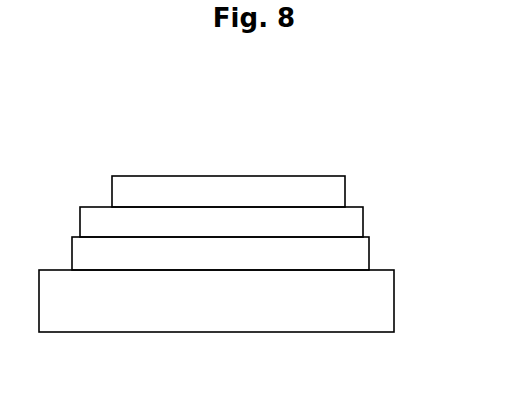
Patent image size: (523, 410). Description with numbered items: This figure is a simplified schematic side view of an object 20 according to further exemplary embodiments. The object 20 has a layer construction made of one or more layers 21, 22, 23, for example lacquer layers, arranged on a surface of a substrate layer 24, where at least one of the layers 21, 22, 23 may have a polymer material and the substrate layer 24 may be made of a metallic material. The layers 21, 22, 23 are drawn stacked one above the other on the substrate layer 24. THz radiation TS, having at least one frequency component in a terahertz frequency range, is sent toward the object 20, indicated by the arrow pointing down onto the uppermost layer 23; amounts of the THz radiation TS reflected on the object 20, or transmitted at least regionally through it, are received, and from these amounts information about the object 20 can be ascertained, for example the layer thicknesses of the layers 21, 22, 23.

The object 20 is at (112, 150).
The layer 21 is at (369, 250).
The layer 22 is at (363, 220).
The layer 23 is at (345, 190).
The substrate layer 24 is at (394, 294).
The THz radiation TS is at (224, 162).